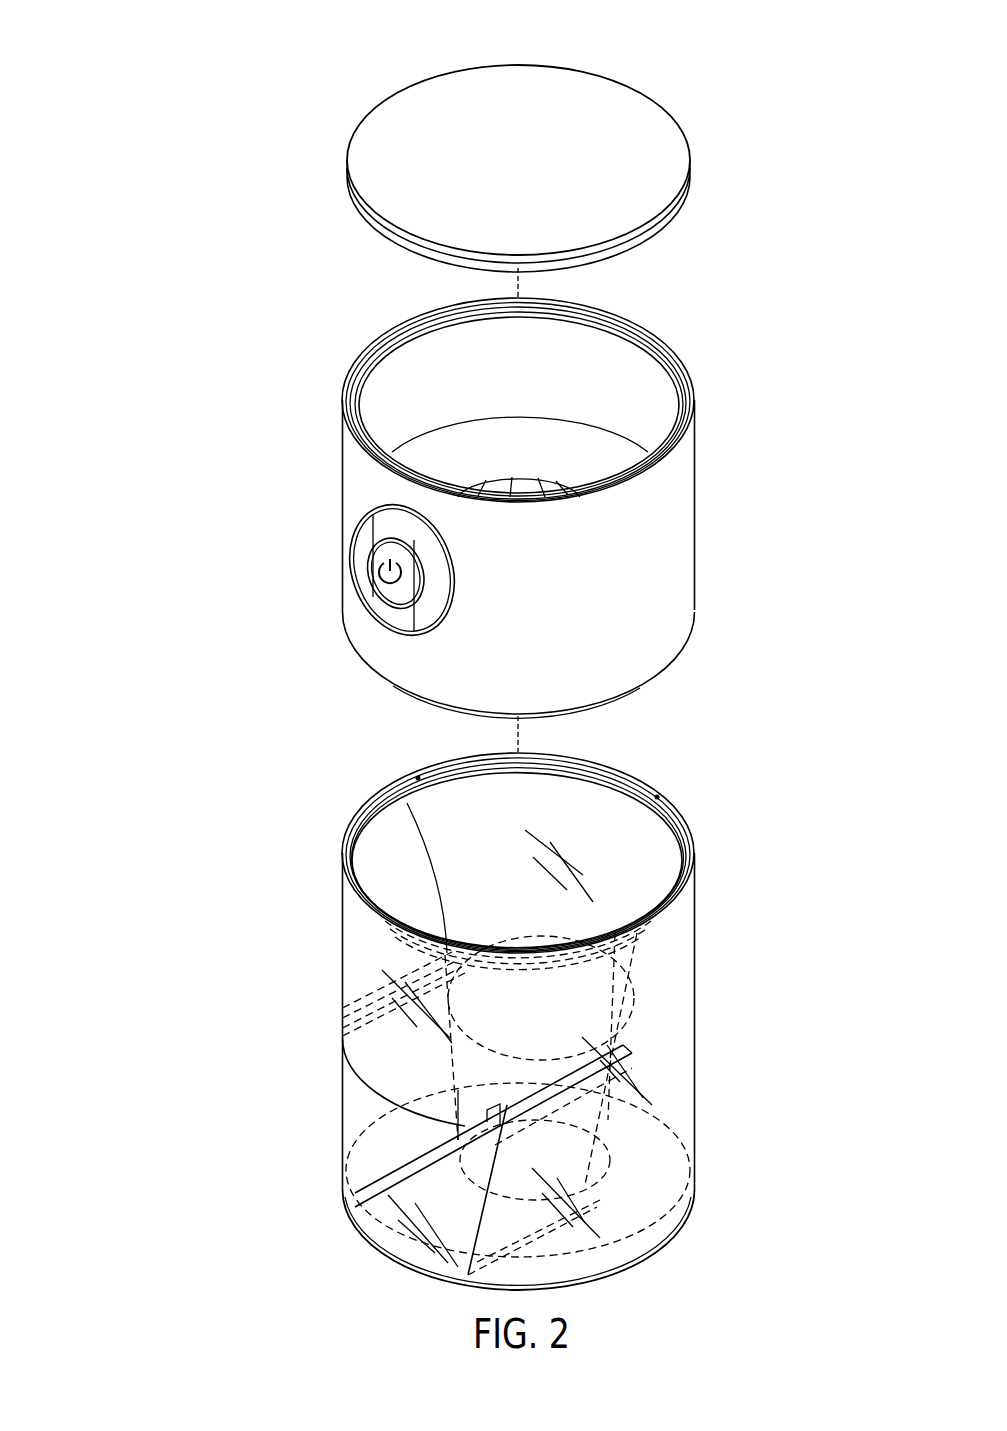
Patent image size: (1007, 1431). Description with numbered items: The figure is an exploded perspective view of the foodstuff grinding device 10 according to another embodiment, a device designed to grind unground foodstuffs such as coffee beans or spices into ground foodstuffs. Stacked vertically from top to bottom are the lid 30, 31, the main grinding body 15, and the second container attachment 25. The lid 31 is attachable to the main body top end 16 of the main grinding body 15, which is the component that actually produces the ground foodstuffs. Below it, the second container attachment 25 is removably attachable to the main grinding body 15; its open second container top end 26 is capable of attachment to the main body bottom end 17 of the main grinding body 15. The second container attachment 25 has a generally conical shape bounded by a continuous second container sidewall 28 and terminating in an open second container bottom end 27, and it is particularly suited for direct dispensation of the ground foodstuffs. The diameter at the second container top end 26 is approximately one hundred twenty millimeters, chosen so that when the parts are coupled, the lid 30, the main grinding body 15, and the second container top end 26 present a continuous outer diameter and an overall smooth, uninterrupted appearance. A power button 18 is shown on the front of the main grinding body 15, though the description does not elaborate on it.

The foodstuff grinding device 10 is at (55, 150).
The lid 30 is at (511, 140).
The lid 31 is at (632, 193).
The main grinding body 15 is at (465, 520).
The main body top end 16 is at (675, 353).
The main body bottom end 17 is at (415, 698).
The power button 18 is at (372, 634).
The second container attachment 25 is at (494, 1034).
The second container top end 26 is at (678, 822).
The second container bottom end 27 is at (597, 1277).
The second container sidewall 28 is at (652, 1153).